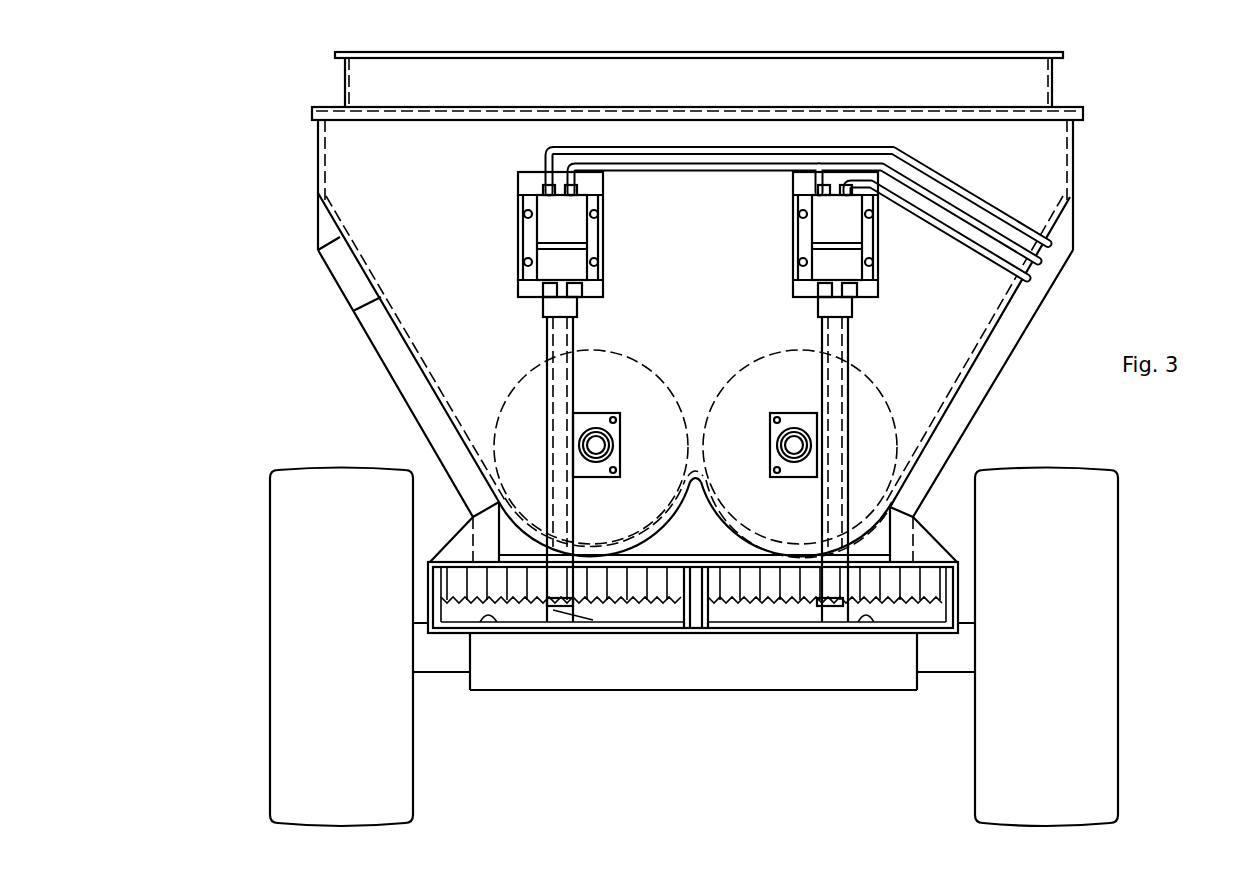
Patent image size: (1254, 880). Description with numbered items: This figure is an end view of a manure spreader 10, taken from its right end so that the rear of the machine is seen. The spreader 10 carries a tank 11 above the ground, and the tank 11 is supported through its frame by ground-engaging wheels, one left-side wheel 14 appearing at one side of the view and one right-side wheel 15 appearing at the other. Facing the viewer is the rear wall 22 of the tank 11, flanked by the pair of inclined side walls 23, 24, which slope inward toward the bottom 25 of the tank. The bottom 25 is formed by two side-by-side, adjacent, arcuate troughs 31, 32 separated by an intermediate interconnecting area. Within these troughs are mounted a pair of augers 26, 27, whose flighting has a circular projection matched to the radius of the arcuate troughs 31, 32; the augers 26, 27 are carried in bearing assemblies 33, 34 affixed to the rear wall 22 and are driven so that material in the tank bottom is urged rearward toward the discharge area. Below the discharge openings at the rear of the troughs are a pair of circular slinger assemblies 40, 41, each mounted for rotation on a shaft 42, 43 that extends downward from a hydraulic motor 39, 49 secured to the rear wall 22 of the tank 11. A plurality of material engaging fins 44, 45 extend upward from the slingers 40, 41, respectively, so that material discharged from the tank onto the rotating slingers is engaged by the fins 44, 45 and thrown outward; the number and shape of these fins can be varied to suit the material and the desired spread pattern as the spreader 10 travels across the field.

The manure spreader 10 is at (266, 102).
The tank 11 is at (611, 44).
The ground-engaging wheel 14 is at (318, 469).
The ground-engaging wheel 15 is at (1050, 473).
The rear wall 22 is at (424, 183).
The inclined side wall 23 is at (380, 298).
The inclined side wall 24 is at (997, 330).
The bottom 25 is at (695, 467).
The auger 26 is at (616, 344).
The auger 27 is at (771, 344).
The arcuate trough 31 is at (684, 532).
The arcuate trough 32 is at (707, 532).
The bearing assembly 33 is at (600, 417).
The bearing assembly 34 is at (787, 423).
The hydraulic motor 39 is at (565, 232).
The circular slinger assembly 40 is at (490, 620).
The circular slinger assembly 41 is at (866, 620).
The shaft 42 is at (580, 610).
The shaft 43 is at (828, 578).
The material engaging fin 44 is at (455, 612).
The material engaging fin 45 is at (748, 612).
The hydraulic motor 49 is at (826, 232).